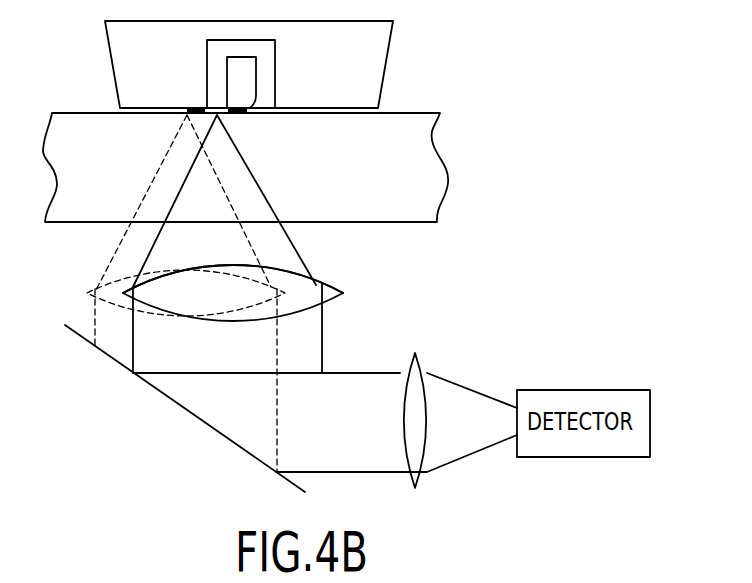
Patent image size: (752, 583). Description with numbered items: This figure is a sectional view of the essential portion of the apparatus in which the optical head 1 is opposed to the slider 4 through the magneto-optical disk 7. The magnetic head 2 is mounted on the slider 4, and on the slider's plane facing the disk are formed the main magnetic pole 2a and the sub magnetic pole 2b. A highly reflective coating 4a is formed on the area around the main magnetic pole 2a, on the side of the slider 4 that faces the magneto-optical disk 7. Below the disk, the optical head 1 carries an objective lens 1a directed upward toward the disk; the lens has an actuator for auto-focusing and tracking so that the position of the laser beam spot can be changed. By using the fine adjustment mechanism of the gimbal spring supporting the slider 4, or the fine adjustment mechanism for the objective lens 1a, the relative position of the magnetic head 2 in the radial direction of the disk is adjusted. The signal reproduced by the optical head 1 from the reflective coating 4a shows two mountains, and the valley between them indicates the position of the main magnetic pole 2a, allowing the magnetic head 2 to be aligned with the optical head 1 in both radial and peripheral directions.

The optical head 1 is at (433, 267).
The objective lens 1a is at (218, 302).
The magnetic head 2 is at (165, 371).
The main magnetic pole 2a is at (213, 77).
The sub magnetic pole 2b is at (271, 73).
The slider 4 is at (380, 45).
The highly reflective coating 4a is at (197, 114).
The magneto-optical disk 7 is at (432, 132).